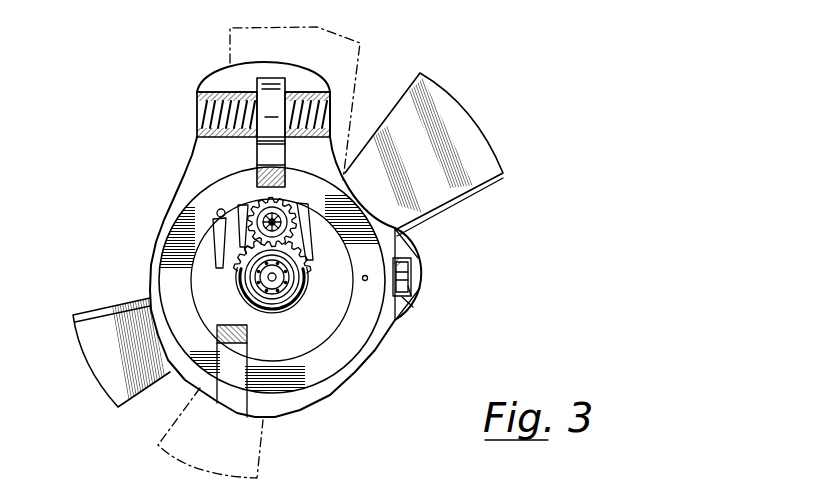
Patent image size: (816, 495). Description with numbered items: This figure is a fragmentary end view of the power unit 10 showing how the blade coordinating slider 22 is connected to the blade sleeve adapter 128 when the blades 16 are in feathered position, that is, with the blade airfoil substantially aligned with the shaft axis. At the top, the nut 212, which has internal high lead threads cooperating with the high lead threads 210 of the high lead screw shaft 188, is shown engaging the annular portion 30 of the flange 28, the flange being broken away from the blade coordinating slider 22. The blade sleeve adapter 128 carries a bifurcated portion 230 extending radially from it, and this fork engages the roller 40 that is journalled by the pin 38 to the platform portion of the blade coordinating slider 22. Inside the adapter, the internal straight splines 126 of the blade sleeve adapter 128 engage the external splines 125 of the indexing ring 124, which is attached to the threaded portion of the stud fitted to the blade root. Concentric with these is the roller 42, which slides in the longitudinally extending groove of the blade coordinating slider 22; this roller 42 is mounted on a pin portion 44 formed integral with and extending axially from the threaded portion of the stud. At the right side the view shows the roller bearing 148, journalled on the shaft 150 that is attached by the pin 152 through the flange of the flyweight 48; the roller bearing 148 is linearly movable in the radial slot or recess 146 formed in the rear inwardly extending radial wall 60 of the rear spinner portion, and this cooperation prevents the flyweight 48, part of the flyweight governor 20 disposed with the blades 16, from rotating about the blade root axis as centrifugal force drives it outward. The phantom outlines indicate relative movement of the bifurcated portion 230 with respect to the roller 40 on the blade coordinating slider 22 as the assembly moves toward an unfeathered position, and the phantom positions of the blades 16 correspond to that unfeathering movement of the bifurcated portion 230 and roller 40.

The power unit 10 is at (150, 253).
The blade 16 is at (445, 103).
The flyweight governor 20 is at (349, 358).
The blade coordinating slider 22 is at (237, 390).
The flange 28 is at (257, 143).
The annular portion 30 is at (274, 78).
The pin 38 is at (272, 212).
The roller 40 is at (280, 212).
The roller 42 is at (258, 286).
The pin portion 44 is at (250, 277).
The flyweight 48 is at (323, 368).
The rear inwardly extending radial wall 60 is at (407, 307).
The indexing ring 124 is at (300, 296).
The external splines 125 is at (297, 242).
The internal straight splines 126 is at (306, 270).
The blade sleeve adapter 128 is at (274, 322).
The radial slot or recess 146 is at (418, 290).
The roller bearing 148 is at (420, 255).
The shaft 150 is at (414, 274).
The pin 152 is at (365, 282).
The high lead screw shaft 188 is at (326, 94).
The high lead threads 210 is at (199, 112).
The nut 212 is at (219, 93).
The bifurcated portion 230 is at (258, 205).